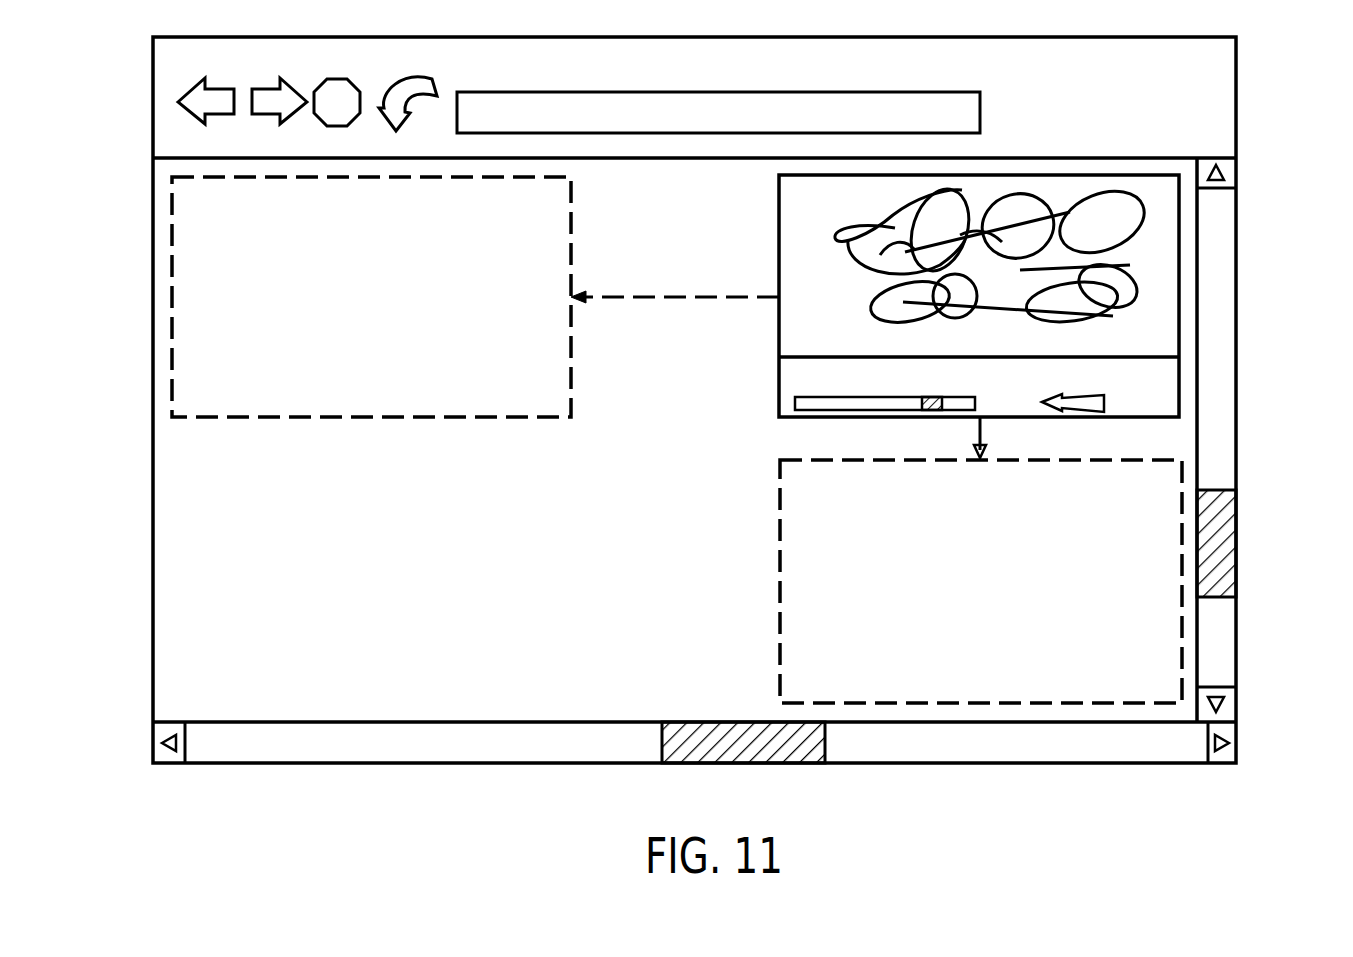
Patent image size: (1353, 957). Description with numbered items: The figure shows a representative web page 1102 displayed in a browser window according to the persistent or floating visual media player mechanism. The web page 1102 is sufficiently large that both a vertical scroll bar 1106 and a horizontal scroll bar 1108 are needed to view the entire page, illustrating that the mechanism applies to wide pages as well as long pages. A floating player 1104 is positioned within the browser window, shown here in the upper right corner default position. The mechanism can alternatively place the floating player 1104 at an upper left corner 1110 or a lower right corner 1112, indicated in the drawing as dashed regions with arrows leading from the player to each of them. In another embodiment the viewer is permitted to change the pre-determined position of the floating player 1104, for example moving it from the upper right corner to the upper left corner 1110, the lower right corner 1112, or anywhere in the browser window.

The web page 1102 is at (473, 593).
The floating player 1104 is at (1158, 190).
The vertical scroll bar 1106 is at (1226, 526).
The horizontal scroll bar 1108 is at (728, 758).
The upper left corner 1110 is at (388, 299).
The lower right corner 1112 is at (1027, 593).